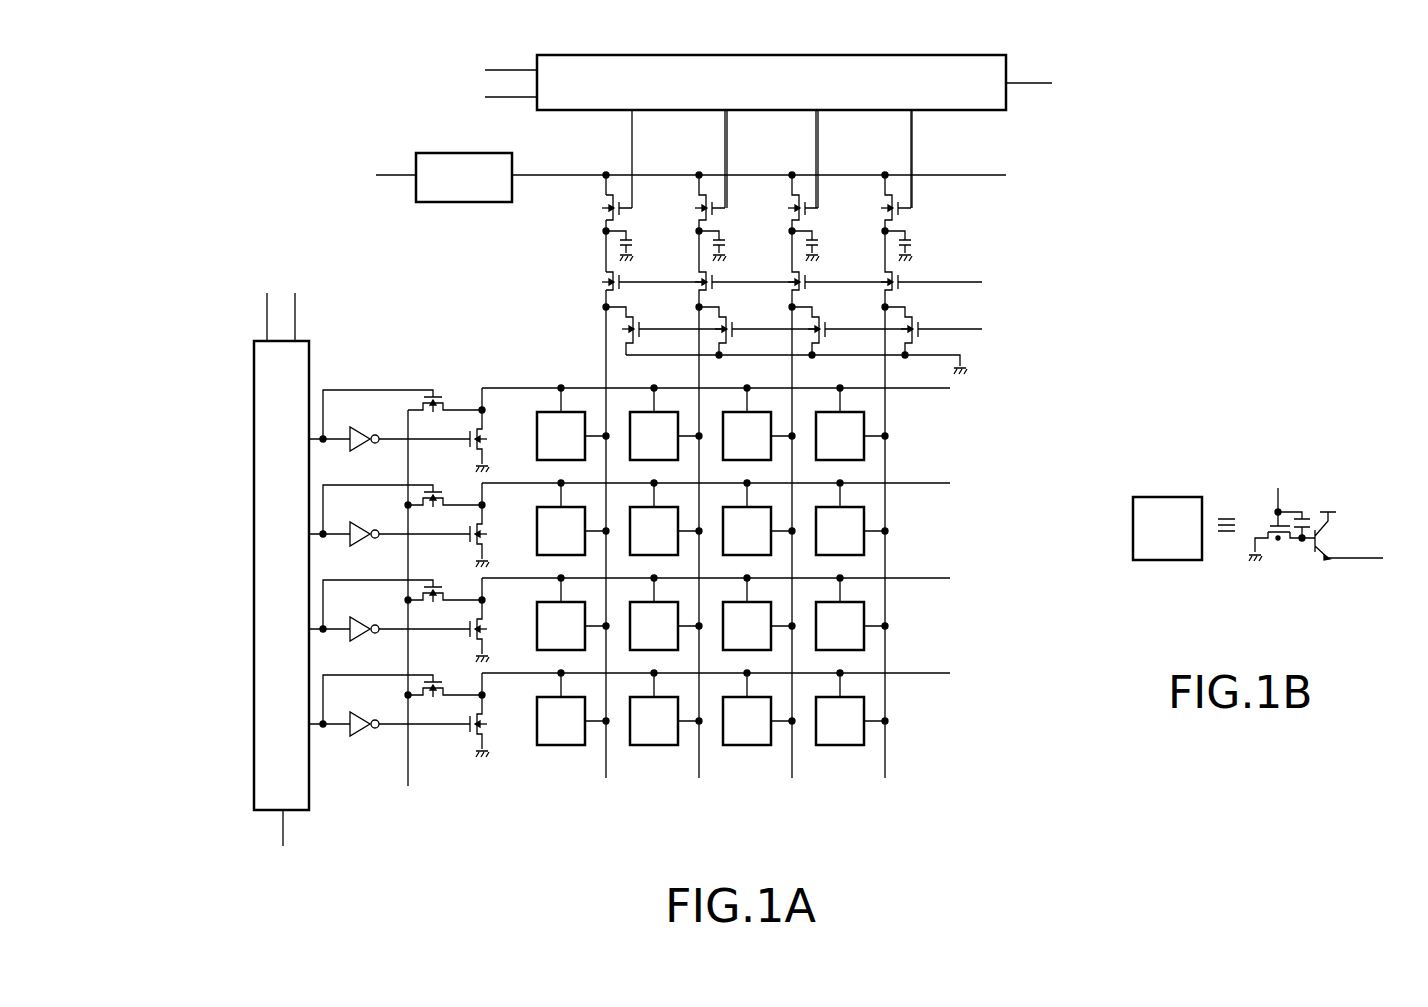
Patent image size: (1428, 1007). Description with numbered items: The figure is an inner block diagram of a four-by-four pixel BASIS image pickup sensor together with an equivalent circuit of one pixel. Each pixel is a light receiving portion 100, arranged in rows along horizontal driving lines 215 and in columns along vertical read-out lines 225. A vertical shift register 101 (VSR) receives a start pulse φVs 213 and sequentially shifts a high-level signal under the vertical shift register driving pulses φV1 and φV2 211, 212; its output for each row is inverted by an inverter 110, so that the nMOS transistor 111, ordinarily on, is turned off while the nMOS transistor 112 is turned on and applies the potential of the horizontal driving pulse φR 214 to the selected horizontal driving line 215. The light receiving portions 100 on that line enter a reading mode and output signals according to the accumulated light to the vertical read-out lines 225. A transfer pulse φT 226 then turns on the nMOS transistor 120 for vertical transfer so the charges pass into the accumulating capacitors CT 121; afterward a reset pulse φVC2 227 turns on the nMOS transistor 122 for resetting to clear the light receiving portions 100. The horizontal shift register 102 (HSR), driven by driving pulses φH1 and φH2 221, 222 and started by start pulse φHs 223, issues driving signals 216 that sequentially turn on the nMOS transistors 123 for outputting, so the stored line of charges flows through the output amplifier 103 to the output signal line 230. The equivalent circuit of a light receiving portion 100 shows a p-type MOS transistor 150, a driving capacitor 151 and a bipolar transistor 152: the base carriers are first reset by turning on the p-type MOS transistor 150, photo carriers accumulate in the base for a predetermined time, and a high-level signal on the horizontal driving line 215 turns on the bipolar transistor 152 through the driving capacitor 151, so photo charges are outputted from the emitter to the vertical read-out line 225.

In FIG. 1A, the driving pulse φH1 221 is at (508, 70).
In FIG. 1A, the driving pulse φH2 222 is at (508, 97).
In FIG. 1A, the driving signal 216 is at (634, 132).
In FIG. 1A, the start pulse φHs 223 is at (1024, 84).
In FIG. 1A, the horizontal shift register 102 is at (960, 110).
In FIG. 1A, the output signal line 230 is at (393, 176).
In FIG. 1A, the output amplifier 103 is at (465, 202).
In FIG. 1A, the nMOS transistor for outputting 123 is at (582, 209).
In FIG. 1A, the accumulating capacitor CT 121 is at (654, 249).
In FIG. 1A, the nMOS transistor for resetting 122 is at (652, 320).
In FIG. 1A, the nMOS transistor for vertical transfer 120 is at (575, 282).
In FIG. 1A, the transfer pulse φT 226 is at (957, 282).
In FIG. 1A, the reset pulse φVC2 227 is at (955, 329).
In FIG. 1A, the vertical shift register driving pulse φV1 211 is at (267, 313).
In FIG. 1A, the vertical shift register driving pulse φV2 212 is at (295, 313).
In FIG. 1A, the nMOS transistor for driving the second horizontal line 112 is at (406, 396).
In FIG. 1A, the nMOS transistor for driving the first horizontal line 111 is at (457, 432).
In FIG. 1A, the vertical shift register 101 is at (254, 426).
In FIG. 1A, the inverter 110 is at (376, 453).
In FIG. 1A, the light receiving portion 100 is at (573, 422).
In FIG. 1B, the light receiving portion 100 is at (1163, 497).
In FIG. 1A, the horizontal driving line 215 is at (718, 411).
In FIG. 1A, the horizontal driving pulse φR 214 is at (409, 778).
In FIG. 1A, the start pulse φVs 213 is at (284, 832).
In FIG. 1A, the vertical read-out line 225 is at (640, 624).
In FIG. 1B, the driving capacitor 151 is at (1306, 516).
In FIG. 1B, the p-type MOS transistor 150 is at (1275, 548).
In FIG. 1B, the bipolar transistor 152 is at (1312, 560).